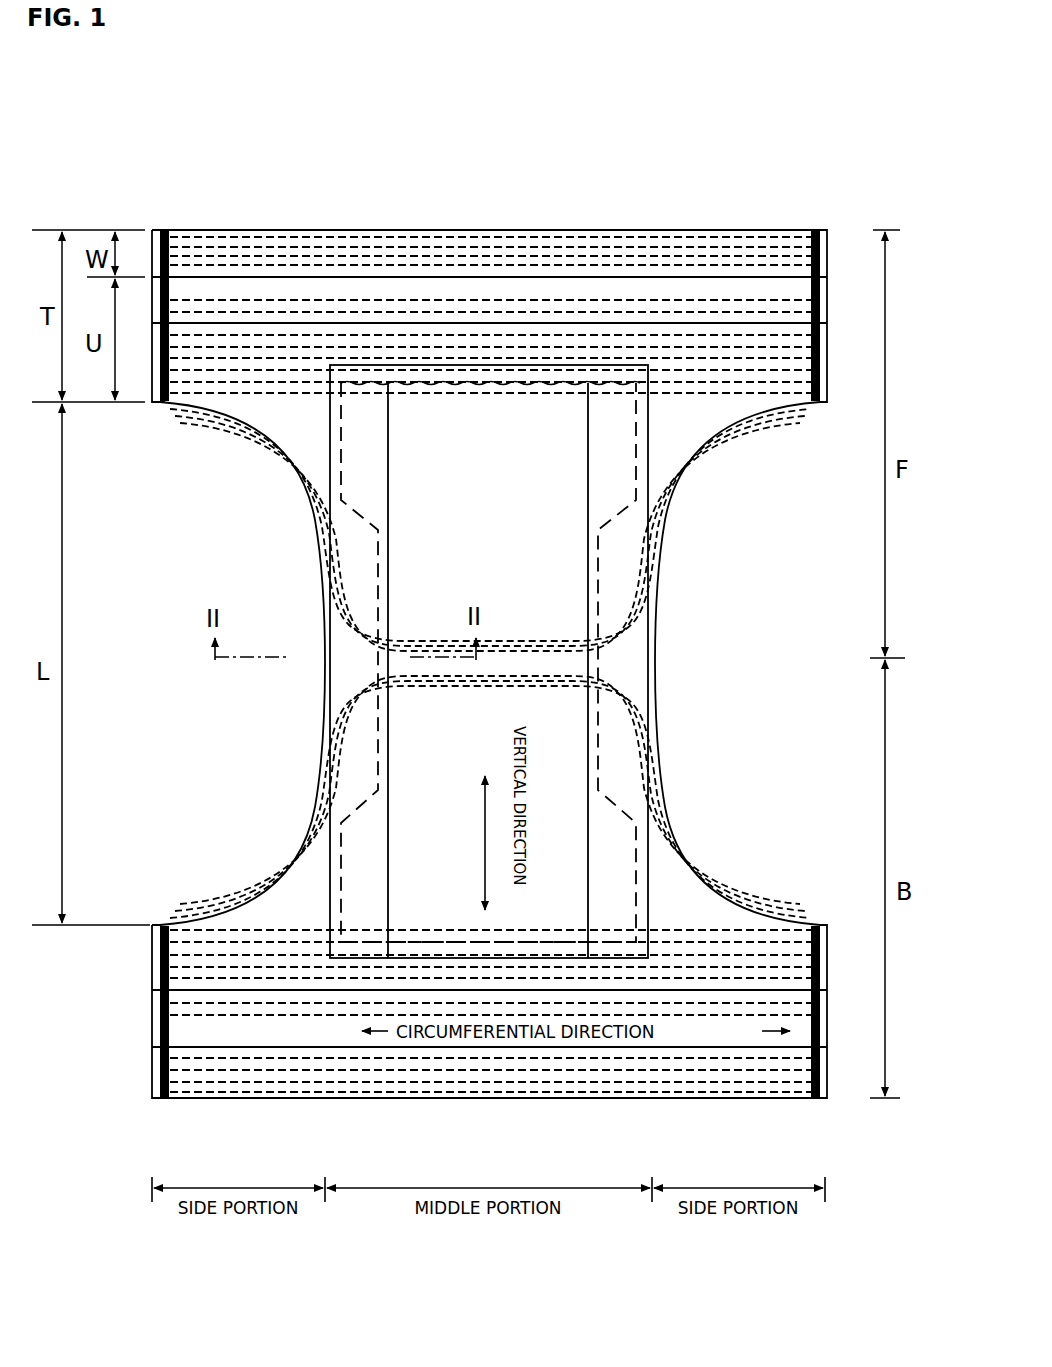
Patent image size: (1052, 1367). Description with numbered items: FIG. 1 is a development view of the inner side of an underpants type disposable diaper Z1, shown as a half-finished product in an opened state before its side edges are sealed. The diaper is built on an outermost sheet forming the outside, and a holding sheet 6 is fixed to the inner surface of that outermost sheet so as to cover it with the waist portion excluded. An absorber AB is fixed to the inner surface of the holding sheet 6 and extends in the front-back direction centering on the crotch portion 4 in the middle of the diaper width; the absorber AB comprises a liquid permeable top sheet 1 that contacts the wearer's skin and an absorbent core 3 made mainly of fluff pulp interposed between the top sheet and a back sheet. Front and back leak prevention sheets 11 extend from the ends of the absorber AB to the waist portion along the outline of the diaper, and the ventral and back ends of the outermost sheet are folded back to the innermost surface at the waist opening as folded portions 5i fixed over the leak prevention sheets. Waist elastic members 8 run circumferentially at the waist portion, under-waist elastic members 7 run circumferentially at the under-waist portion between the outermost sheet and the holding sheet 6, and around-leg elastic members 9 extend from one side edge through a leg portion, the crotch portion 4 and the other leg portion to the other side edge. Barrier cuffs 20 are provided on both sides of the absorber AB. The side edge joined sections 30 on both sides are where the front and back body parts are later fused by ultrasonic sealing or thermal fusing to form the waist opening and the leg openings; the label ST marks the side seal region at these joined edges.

The underpants type disposable diaper Z1 is at (102, 165).
The liquid permeable top sheet 1 is at (432, 560).
The absorbent core 3 is at (377, 733).
The crotch portion 4 is at (658, 630).
The folded portion 5i is at (305, 264).
The holding sheet 6 is at (316, 440).
The under-waist elastic member 7 is at (430, 312).
The waist elastic member 8 is at (606, 258).
The around-leg elastic member 9 is at (697, 426).
The leak prevention sheet 11 is at (480, 290).
The barrier cuff 20 is at (348, 675).
The side edge joined section 30 is at (170, 300).
The side seal ST is at (163, 410).
The absorber AB is at (462, 758).